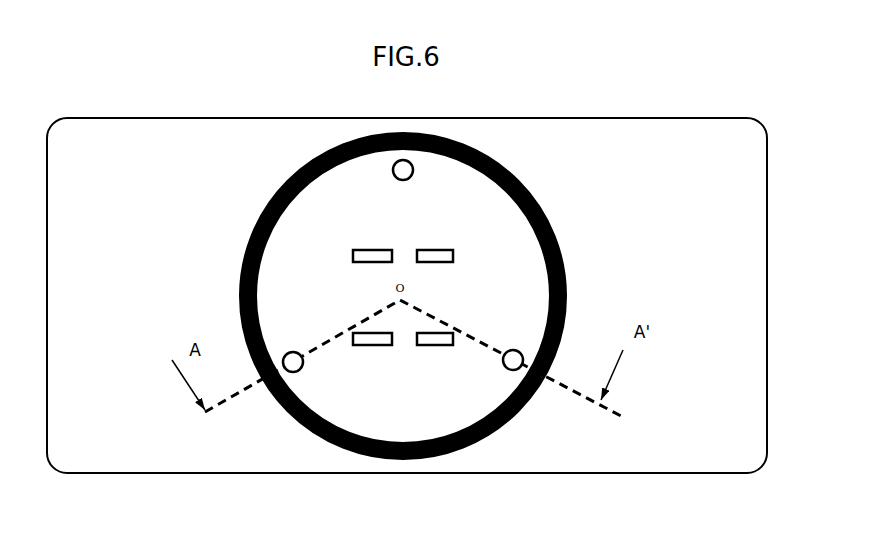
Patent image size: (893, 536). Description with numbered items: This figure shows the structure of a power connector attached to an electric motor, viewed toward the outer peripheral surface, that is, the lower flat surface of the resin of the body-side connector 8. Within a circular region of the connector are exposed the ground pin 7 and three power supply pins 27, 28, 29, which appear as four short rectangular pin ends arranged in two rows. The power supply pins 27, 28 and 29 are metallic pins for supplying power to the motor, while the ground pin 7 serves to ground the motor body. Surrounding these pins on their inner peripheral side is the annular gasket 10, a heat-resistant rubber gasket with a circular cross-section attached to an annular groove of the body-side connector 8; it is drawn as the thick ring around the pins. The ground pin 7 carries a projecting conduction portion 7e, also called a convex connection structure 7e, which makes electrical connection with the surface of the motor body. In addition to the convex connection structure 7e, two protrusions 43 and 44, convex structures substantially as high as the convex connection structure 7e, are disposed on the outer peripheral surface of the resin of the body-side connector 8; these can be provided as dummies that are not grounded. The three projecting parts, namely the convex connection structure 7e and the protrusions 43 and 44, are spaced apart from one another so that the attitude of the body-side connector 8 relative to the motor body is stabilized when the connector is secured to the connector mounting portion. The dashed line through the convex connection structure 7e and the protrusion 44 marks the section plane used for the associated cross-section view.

The body-side connector 8 is at (160, 177).
The annular gasket 10 is at (310, 160).
The power supply pin 27 is at (372, 246).
The power supply pin 28 is at (436, 246).
The protrusion 43 is at (413, 161).
The ground pin 7 is at (372, 349).
The power supply pin 29 is at (436, 349).
The projecting conduction portion 7e is at (293, 375).
The protrusion 44 is at (513, 373).